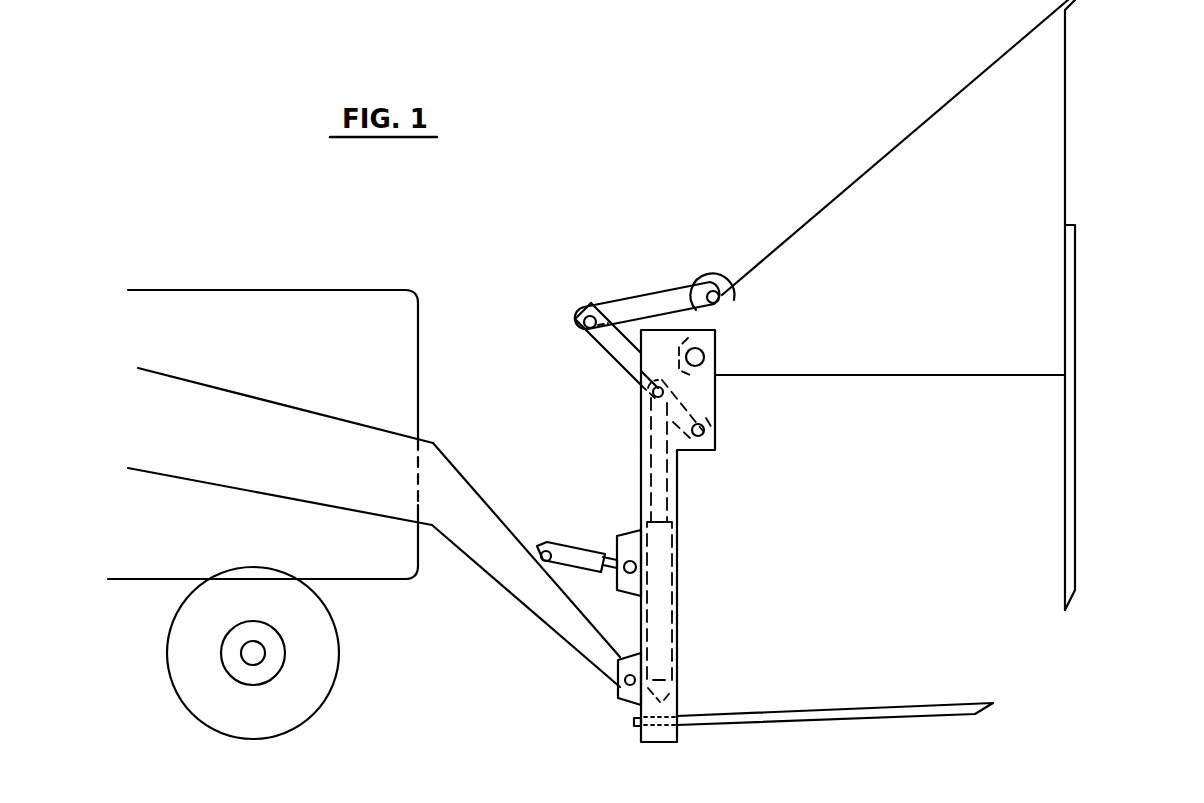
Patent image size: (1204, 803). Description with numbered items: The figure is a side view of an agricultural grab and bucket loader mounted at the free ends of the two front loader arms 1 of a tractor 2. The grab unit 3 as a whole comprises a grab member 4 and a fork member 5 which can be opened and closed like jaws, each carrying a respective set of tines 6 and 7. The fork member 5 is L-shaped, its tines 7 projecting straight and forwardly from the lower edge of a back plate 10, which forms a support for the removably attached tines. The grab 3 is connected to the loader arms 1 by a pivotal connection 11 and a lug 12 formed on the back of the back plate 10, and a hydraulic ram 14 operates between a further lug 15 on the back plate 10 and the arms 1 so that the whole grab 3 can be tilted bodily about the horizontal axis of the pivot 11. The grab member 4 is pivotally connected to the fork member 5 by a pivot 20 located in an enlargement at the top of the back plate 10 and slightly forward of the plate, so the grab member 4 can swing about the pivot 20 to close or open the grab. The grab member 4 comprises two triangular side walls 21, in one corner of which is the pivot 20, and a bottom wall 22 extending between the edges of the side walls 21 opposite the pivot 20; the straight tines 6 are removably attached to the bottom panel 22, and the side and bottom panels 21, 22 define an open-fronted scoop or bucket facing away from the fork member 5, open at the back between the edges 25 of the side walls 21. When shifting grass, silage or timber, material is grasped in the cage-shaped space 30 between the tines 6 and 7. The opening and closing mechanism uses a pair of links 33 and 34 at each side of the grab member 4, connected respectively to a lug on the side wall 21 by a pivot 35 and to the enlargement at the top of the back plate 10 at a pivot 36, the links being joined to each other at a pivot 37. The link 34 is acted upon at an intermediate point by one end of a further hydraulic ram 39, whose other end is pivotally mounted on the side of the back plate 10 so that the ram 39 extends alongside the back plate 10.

The front loader arms 1 is at (448, 483).
The tractor 2 is at (334, 313).
The grab unit 3 is at (690, 253).
The grab member 4 is at (933, 386).
The fork member 5 is at (703, 652).
The tines of the grab member 6 is at (1072, 490).
The tines of the fork member 7 is at (846, 715).
The back plate 10 is at (678, 498).
The pivotal connection 11 is at (617, 685).
The lug 12 is at (627, 696).
The hydraulic ram 14 is at (577, 552).
The further lug 15 is at (627, 550).
The pivot 20 is at (703, 365).
The side walls 21 is at (920, 243).
The bottom wall 22 is at (1070, 103).
The edges of the side walls 25 is at (862, 378).
The cage-shaped space 30 is at (873, 553).
The link 33 is at (640, 307).
The link 34 is at (625, 358).
The pivot 35 is at (714, 286).
The pivot 36 is at (705, 436).
The pivot 37 is at (584, 316).
The further hydraulic ram 39 is at (666, 588).